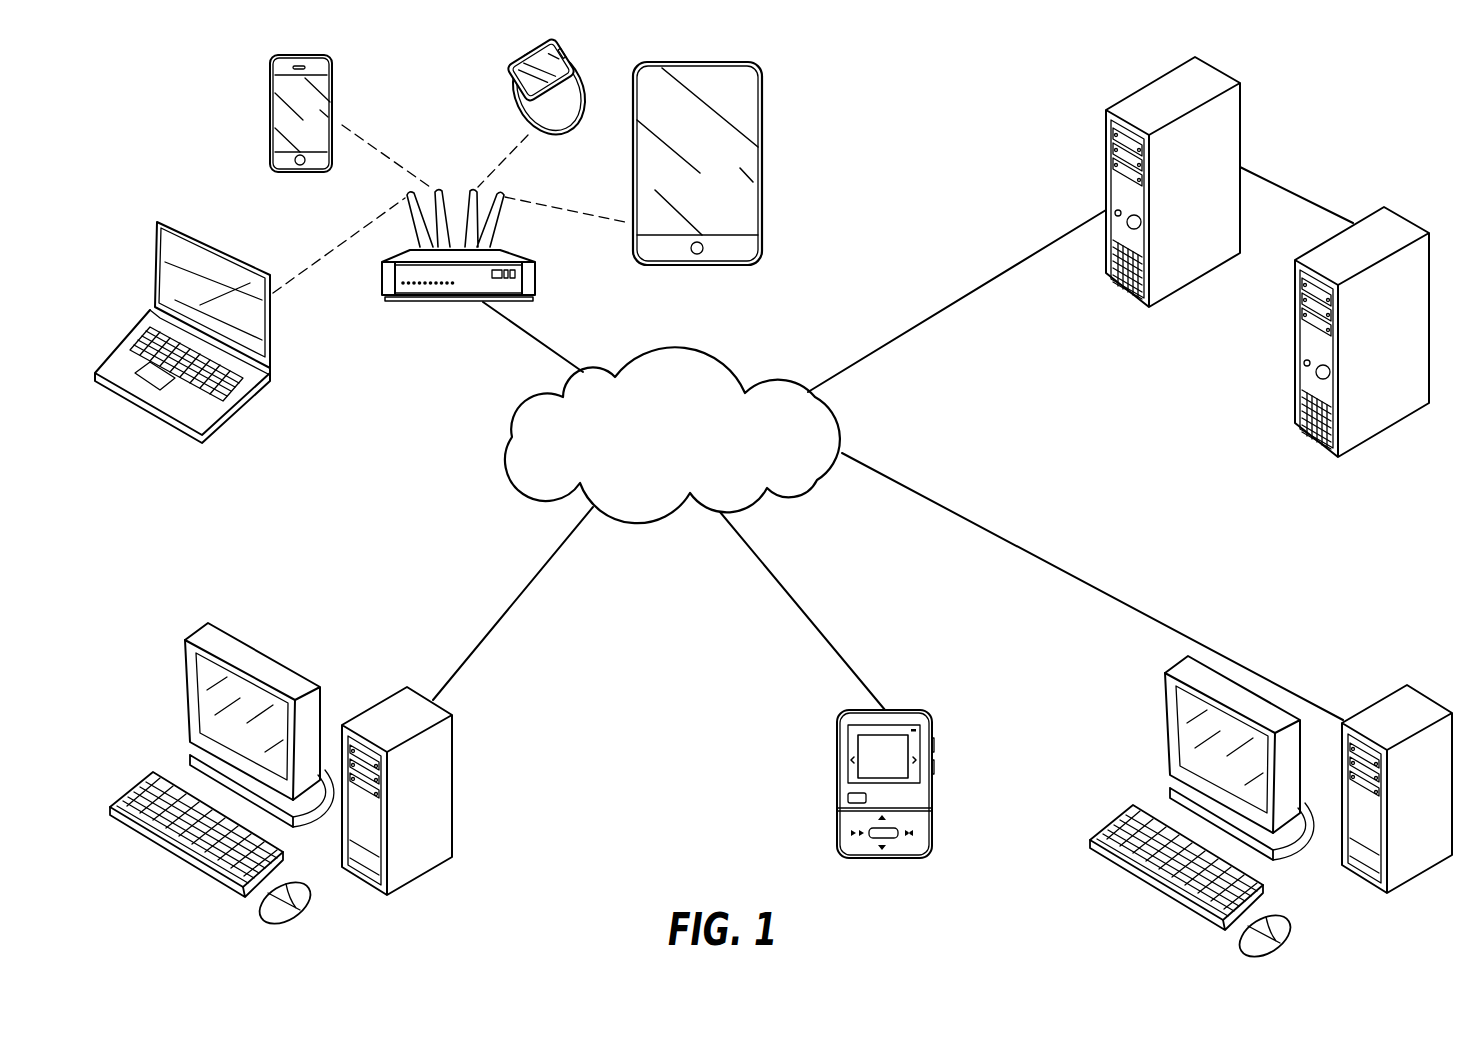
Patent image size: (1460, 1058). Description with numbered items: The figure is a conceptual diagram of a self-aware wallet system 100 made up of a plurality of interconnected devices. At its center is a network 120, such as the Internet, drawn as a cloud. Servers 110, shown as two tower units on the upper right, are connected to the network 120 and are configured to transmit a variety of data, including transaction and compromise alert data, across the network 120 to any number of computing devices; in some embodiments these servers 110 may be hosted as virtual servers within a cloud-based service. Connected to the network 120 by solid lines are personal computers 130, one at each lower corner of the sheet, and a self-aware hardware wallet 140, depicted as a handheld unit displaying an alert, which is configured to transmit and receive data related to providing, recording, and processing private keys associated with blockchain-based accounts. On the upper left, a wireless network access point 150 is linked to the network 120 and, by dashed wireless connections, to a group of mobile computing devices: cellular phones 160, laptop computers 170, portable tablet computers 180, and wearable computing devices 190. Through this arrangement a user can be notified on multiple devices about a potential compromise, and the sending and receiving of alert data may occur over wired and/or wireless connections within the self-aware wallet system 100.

The self-aware wallet system 100 is at (615, 798).
The servers 110 is at (1137, 93).
The network 120 is at (697, 352).
The personal computers 130 is at (187, 632).
The self-aware hardware wallet 140 is at (837, 772).
The wireless network access point 150 is at (433, 298).
The cellular phones 160 is at (272, 110).
The laptop computers 170 is at (155, 268).
The portable tablet computers 180 is at (762, 163).
The wearable computing devices 190 is at (512, 88).